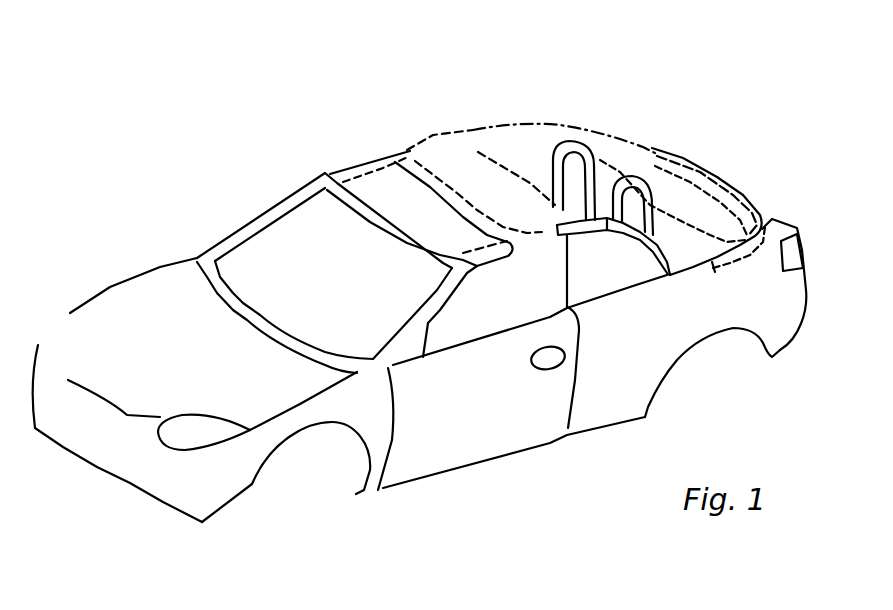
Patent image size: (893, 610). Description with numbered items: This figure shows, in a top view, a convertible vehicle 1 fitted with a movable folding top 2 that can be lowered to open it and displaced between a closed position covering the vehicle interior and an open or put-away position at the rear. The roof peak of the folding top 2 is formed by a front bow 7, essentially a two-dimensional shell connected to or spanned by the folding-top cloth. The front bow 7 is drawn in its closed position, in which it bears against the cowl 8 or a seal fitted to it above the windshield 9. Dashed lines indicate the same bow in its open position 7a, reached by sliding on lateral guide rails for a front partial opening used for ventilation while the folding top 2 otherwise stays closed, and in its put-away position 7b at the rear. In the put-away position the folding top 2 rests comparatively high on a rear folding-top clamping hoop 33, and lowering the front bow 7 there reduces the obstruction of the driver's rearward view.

The convertible vehicle 1 is at (272, 162).
The folding top 2 is at (563, 106).
The front bow 7 is at (385, 186).
The front bow in open position 7a is at (466, 152).
The front bow in put-away position 7b is at (648, 160).
The cowl 8 is at (328, 172).
The windshield 9 is at (291, 272).
The rear folding-top clamping hoop 33 is at (770, 219).